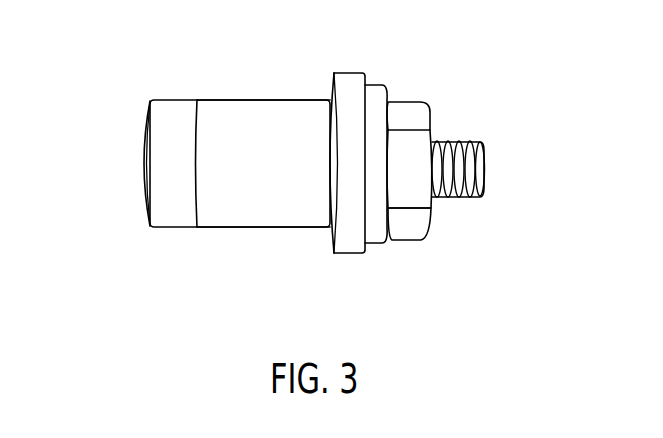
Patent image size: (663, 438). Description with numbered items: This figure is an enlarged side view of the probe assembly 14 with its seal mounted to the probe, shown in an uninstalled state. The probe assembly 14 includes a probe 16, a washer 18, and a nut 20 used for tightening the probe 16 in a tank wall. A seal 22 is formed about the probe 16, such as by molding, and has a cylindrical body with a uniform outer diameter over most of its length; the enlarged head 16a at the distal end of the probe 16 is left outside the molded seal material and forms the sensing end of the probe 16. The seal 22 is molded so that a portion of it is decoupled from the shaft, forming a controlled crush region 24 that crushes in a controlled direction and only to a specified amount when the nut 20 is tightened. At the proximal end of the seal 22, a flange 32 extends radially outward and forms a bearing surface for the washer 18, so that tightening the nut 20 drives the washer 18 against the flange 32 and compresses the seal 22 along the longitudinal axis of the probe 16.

The probe assembly 14 is at (455, 103).
The probe 16 is at (485, 175).
The enlarged head 16a is at (147, 165).
The washer 18 is at (378, 100).
The nut 20 is at (404, 197).
The seal 22 is at (247, 247).
The controlled crush region 24 is at (236, 118).
The flange 32 is at (335, 93).